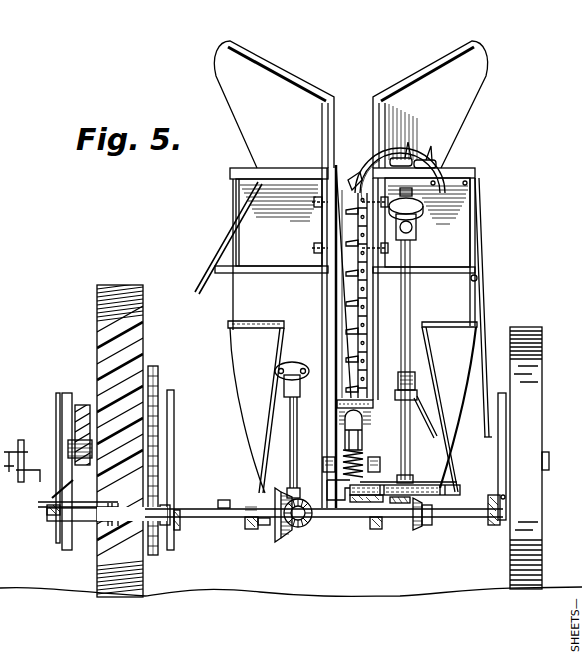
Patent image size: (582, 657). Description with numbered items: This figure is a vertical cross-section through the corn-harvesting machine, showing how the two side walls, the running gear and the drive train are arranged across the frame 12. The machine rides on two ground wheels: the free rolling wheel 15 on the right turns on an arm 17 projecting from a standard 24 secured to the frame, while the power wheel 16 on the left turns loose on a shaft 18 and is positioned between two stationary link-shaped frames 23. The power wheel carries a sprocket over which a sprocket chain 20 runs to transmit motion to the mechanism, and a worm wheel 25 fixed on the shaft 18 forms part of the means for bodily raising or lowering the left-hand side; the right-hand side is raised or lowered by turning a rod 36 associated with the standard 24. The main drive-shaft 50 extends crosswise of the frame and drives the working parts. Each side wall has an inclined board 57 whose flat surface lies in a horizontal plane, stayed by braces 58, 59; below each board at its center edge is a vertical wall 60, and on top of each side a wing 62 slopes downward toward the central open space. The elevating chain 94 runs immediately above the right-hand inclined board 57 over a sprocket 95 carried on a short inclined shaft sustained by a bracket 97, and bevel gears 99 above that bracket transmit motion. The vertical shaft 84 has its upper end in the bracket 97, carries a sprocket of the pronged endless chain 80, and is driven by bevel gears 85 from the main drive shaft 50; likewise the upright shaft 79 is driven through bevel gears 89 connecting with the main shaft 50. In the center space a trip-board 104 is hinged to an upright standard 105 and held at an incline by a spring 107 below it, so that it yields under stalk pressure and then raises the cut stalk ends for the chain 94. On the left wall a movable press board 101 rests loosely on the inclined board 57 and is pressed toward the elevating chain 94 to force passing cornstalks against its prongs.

The frame 12 is at (50, 512).
The free rolling wheel 15 is at (522, 330).
The power wheel 16 is at (100, 336).
The arm 17 is at (6, 460).
The shaft 18 is at (70, 436).
The sprocket chain 20 is at (154, 366).
The link-shaped frames 23 is at (174, 406).
The standard 24 is at (18, 440).
The worm wheel 25 is at (81, 405).
The rod 36 is at (46, 503).
The main drive-shaft 50 is at (212, 518).
The inclined board 57 is at (238, 169).
The brace 58 is at (205, 237).
The brace 59 is at (266, 407).
The vertical wall 60 is at (343, 305).
The wing 62 is at (230, 87).
The upright shaft 79 is at (290, 456).
The endless chain 80 is at (441, 508).
The vertical shaft 84 is at (411, 292).
The bevel gears 85 is at (418, 526).
The bevel gears 89 is at (279, 532).
The elevating chain 94 is at (360, 178).
The sprocket 95 is at (412, 156).
The bracket 97 is at (416, 236).
The bevel gears 99 is at (470, 205).
The press board 101 is at (345, 355).
The trip-board 104 is at (330, 430).
The upright standard 105 is at (345, 508).
The spring 107 is at (392, 459).